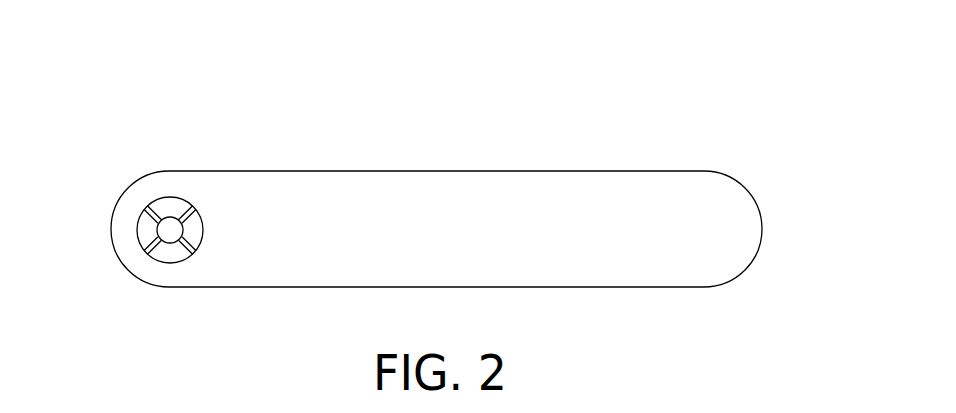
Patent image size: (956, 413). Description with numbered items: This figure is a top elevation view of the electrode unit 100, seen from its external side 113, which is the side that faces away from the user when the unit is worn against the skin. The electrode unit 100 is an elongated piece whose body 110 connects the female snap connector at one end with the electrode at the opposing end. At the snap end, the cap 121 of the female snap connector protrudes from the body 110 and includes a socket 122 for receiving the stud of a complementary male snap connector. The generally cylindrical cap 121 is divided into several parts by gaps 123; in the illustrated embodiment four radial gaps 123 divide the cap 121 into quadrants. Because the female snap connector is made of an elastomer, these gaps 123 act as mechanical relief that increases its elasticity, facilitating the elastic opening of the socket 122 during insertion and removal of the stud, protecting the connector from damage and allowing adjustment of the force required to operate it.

The electrode unit 100 is at (417, 190).
The body 110 is at (577, 187).
The external side 113 is at (467, 242).
The cap 121 is at (169, 204).
The socket 122 is at (172, 230).
The gaps 123 is at (170, 230).